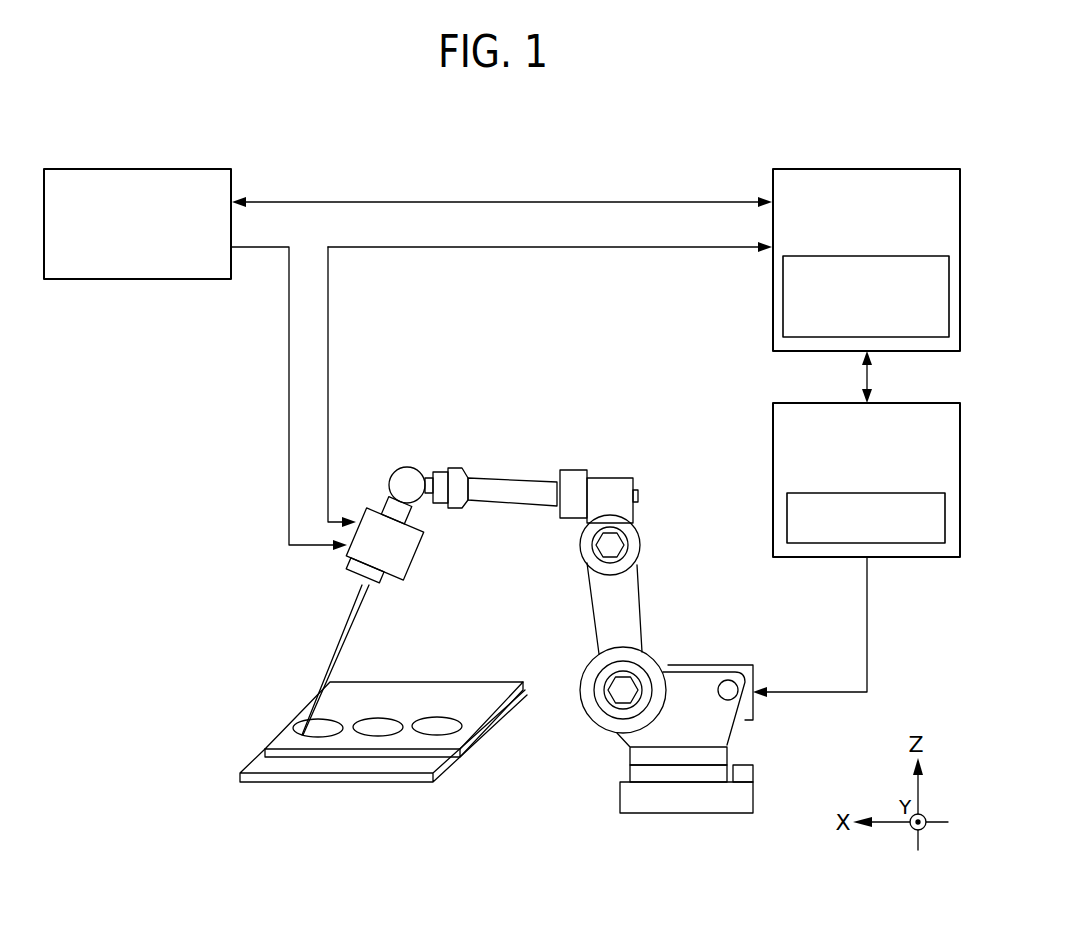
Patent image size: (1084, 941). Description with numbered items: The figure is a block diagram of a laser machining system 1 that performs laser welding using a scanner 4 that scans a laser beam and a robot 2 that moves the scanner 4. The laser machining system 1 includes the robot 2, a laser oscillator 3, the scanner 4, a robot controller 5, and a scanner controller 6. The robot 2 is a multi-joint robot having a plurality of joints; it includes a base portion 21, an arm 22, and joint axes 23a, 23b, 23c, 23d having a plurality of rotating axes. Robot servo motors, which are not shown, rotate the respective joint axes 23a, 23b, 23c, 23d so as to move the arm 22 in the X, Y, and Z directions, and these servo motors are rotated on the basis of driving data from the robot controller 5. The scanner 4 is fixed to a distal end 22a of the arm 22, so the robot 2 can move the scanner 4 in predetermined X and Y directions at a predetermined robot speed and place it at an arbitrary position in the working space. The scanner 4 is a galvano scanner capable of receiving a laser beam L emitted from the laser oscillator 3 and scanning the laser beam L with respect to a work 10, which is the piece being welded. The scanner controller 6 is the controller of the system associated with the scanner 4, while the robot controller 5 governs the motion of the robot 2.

The laser machining system 1 is at (587, 158).
The robot 2 is at (703, 577).
The laser oscillator 3 is at (179, 169).
The scanner 4 is at (410, 560).
The robot controller 5 is at (909, 403).
The scanner controller 6 is at (909, 169).
The work 10 is at (500, 690).
The base portion 21 is at (695, 802).
The arm 22 is at (525, 460).
The distal end 22a is at (373, 482).
The joint axis 23a is at (655, 661).
The joint axis 23b is at (641, 547).
The joint axis 23c is at (607, 478).
The joint axis 23d is at (422, 470).
The laser beam L is at (350, 622).